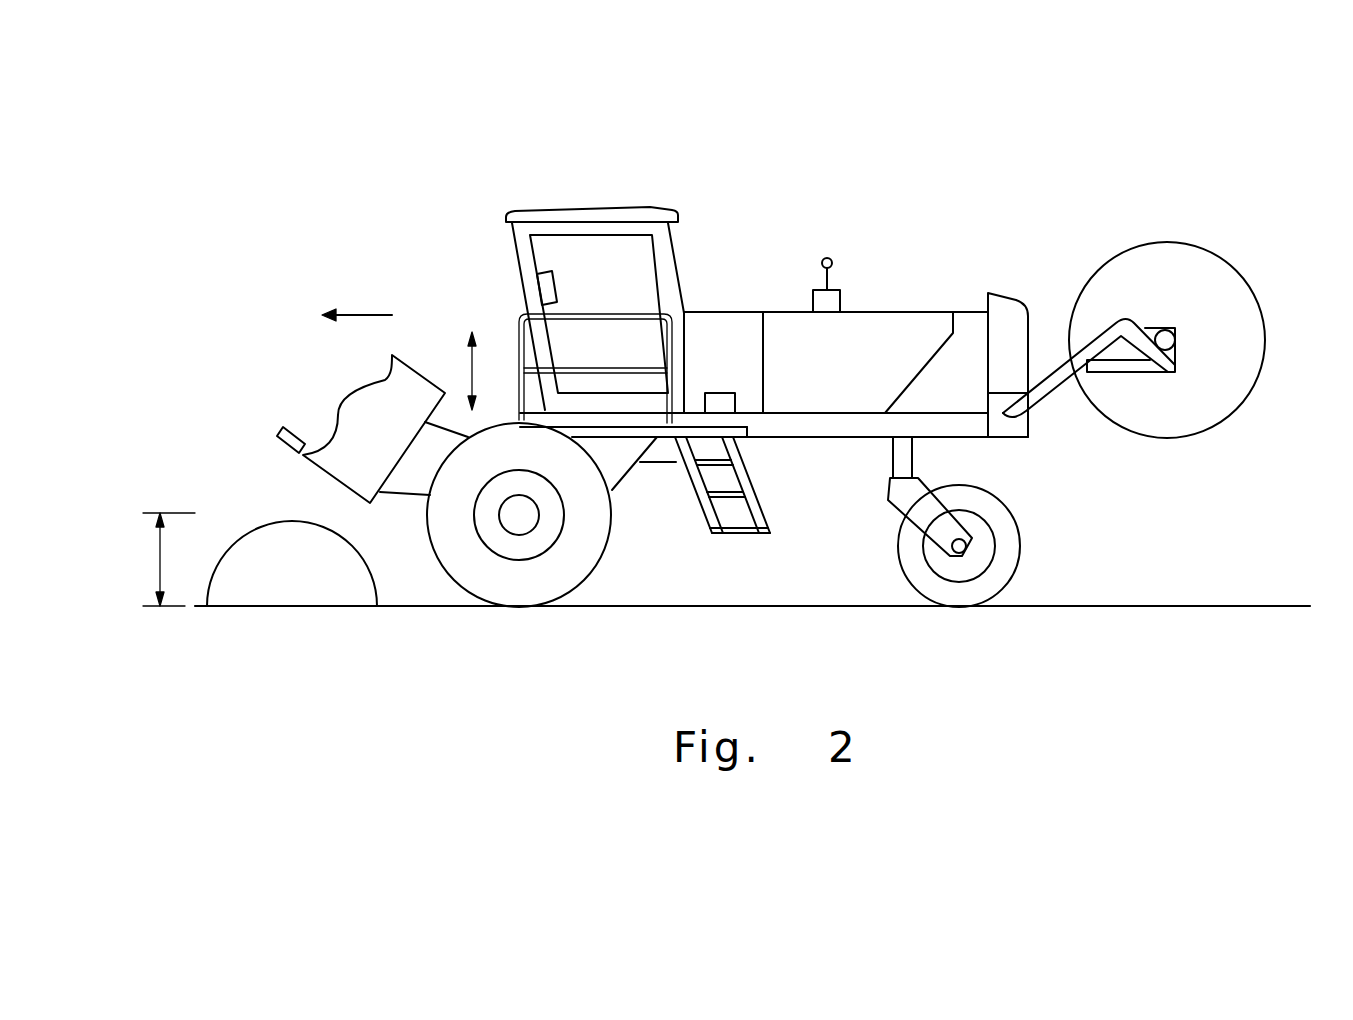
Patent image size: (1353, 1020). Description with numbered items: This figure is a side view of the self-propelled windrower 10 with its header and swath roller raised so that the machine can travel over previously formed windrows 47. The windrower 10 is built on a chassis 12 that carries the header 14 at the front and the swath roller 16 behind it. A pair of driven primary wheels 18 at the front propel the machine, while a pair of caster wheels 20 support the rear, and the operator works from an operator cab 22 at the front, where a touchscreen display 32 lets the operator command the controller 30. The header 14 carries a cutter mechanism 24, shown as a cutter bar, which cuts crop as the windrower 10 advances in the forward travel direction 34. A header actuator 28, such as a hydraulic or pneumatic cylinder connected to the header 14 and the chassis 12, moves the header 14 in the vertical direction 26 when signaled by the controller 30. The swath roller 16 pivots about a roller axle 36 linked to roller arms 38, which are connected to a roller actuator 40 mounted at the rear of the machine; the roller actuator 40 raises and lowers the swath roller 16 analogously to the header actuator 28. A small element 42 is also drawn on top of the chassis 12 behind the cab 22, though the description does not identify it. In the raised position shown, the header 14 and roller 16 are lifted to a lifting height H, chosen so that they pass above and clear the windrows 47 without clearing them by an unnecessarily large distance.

The self-propelled windrower 10 is at (840, 206).
The chassis 12 is at (773, 432).
The header 14 is at (390, 368).
The swath roller 16 is at (1235, 267).
The primary wheels 18 is at (605, 555).
The caster wheels 20 is at (988, 488).
The operator cab 22 is at (535, 215).
The cutter mechanism 24 is at (288, 428).
The vertical direction 26 is at (489, 371).
The header actuator 28 is at (407, 493).
The controller 30 is at (717, 392).
The touchscreen display 32 is at (542, 297).
The forward travel direction 34 is at (357, 303).
The roller axle 36 is at (1172, 340).
The roller arms 38 is at (1048, 398).
The roller actuator 40 is at (1002, 397).
The antenna 42 is at (840, 290).
The windrows 47 is at (283, 590).
The lifting height H is at (169, 559).